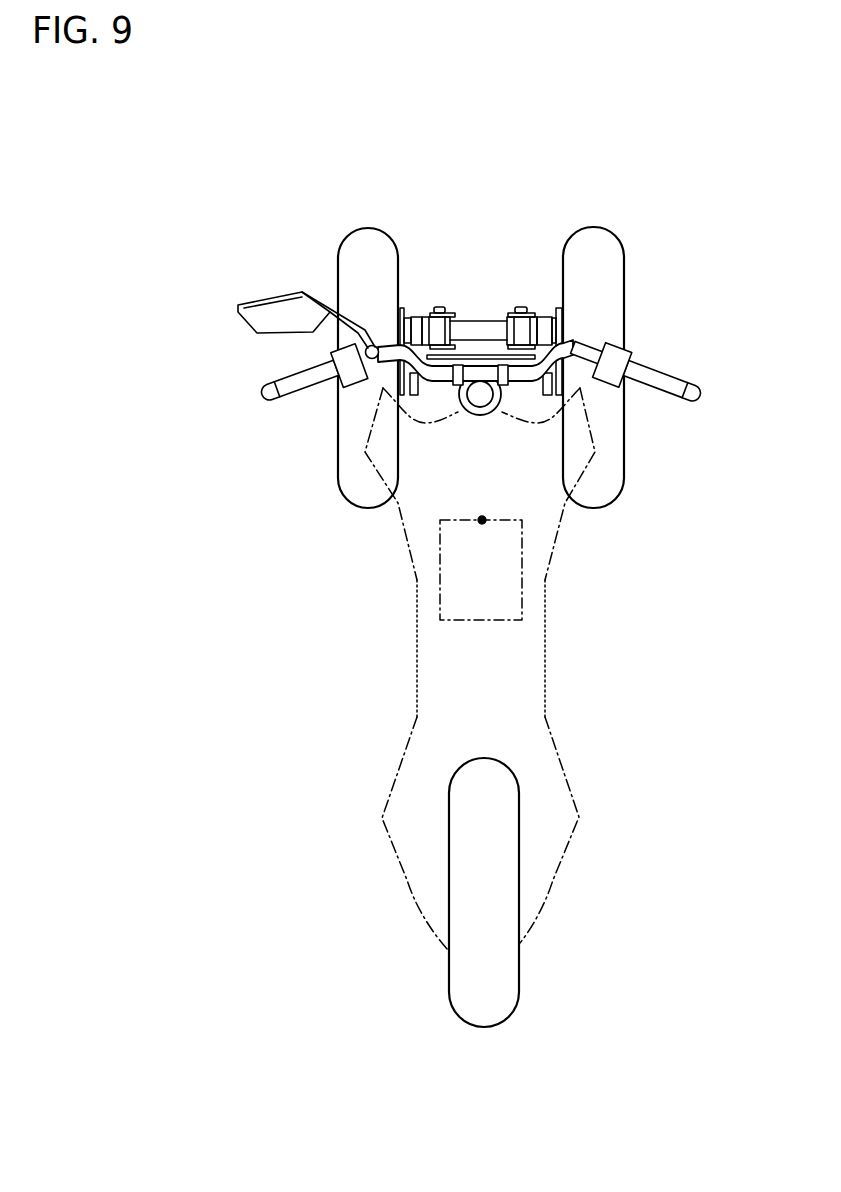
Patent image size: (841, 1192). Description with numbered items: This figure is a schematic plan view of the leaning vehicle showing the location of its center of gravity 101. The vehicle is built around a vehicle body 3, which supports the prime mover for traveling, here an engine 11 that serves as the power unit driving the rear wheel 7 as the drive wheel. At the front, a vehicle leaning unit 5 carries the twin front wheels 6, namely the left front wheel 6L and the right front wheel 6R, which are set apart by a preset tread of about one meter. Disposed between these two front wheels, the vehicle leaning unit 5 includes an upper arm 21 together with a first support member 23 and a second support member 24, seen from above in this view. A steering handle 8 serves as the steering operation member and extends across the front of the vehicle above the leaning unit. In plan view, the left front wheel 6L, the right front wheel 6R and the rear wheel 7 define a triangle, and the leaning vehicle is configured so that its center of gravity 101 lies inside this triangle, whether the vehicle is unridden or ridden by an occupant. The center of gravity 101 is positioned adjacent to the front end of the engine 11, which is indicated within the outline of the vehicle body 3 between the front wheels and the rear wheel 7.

The vehicle body 3 is at (545, 696).
The vehicle leaning unit 5 is at (483, 261).
The twin front wheels 6 is at (485, 296).
The left front wheel 6L is at (373, 240).
The right front wheel 6R is at (592, 240).
The rear wheel 7 is at (458, 1002).
The steering handle 8 is at (668, 372).
The engine 11 is at (442, 582).
The upper arm 21 is at (478, 320).
The first support member 23 is at (421, 313).
The second support member 24 is at (540, 313).
The center of gravity 101 is at (483, 524).